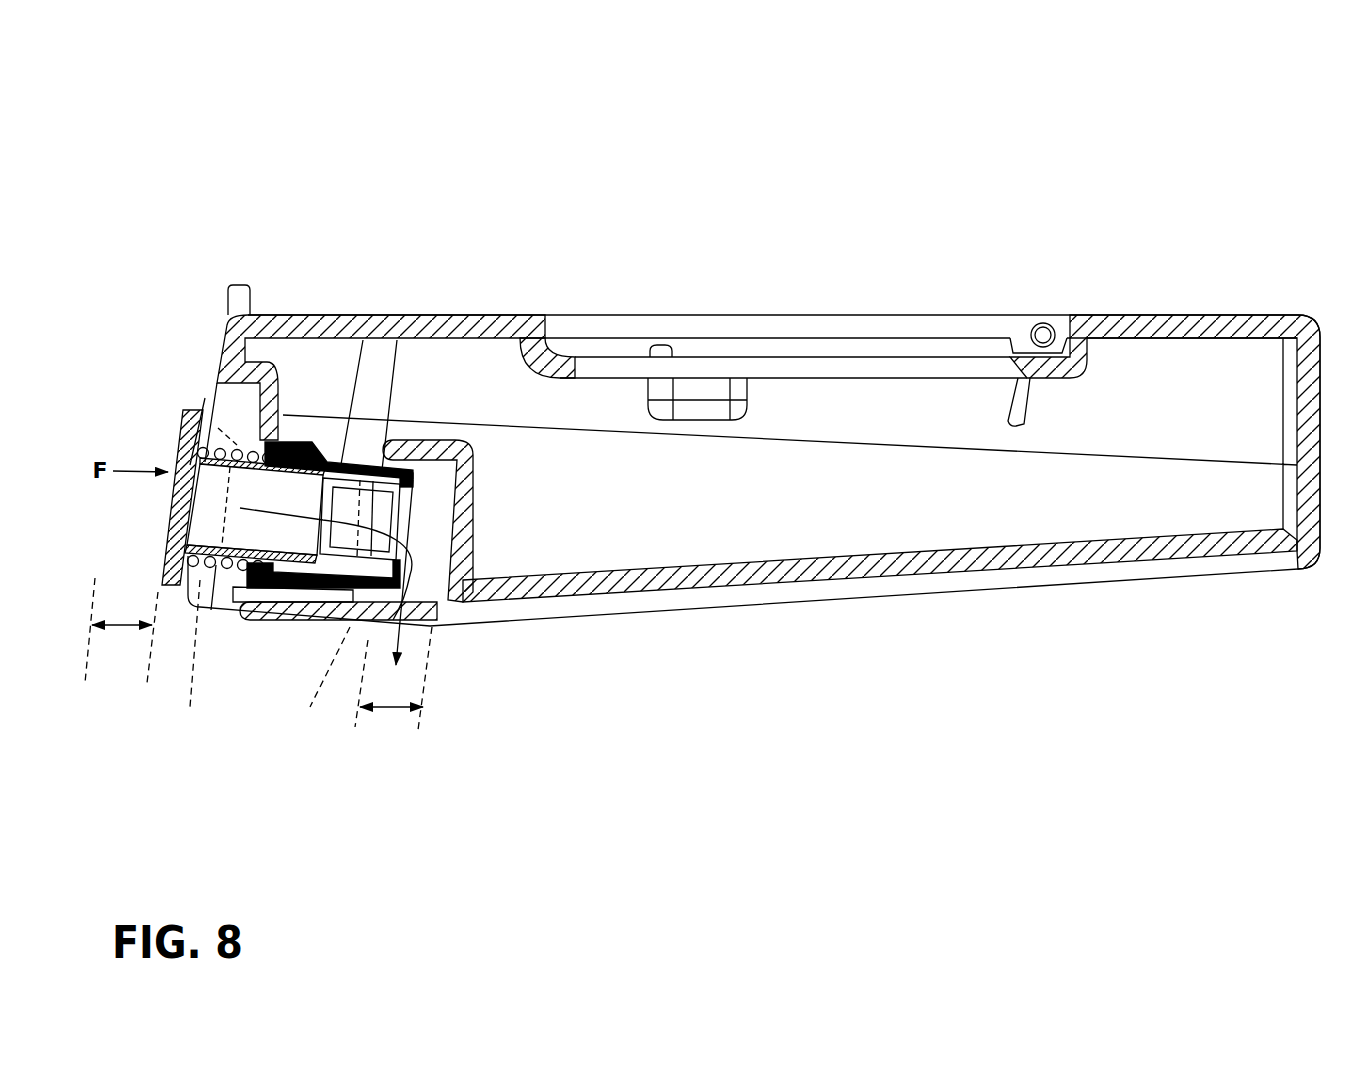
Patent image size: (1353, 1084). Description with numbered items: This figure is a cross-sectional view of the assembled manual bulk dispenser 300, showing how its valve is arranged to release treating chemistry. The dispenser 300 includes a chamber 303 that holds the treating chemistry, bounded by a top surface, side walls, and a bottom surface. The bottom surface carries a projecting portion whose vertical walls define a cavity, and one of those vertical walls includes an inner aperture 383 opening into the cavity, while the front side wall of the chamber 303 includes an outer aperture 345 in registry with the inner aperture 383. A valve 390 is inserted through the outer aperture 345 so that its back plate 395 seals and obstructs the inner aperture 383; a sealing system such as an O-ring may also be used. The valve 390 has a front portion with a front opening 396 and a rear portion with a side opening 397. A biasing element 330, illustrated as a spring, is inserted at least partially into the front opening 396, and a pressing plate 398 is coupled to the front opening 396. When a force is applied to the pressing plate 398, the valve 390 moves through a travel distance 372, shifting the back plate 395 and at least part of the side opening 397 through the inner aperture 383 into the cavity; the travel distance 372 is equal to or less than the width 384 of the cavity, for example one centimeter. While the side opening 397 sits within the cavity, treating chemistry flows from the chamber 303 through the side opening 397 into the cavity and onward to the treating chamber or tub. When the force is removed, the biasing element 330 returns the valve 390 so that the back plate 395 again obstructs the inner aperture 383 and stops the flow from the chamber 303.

The bulk dispenser 300 is at (262, 127).
The chamber 303 is at (1222, 497).
The biasing element 330 is at (220, 593).
The outer aperture 345 is at (303, 658).
The travel distance 372 is at (124, 627).
The inner aperture 383 is at (317, 683).
The width of the cavity 384 is at (390, 708).
The valve 390 is at (203, 383).
The back plate 395 is at (408, 505).
The front opening 396 is at (180, 503).
The side opening 397 is at (410, 520).
The pressing plate 398 is at (183, 433).